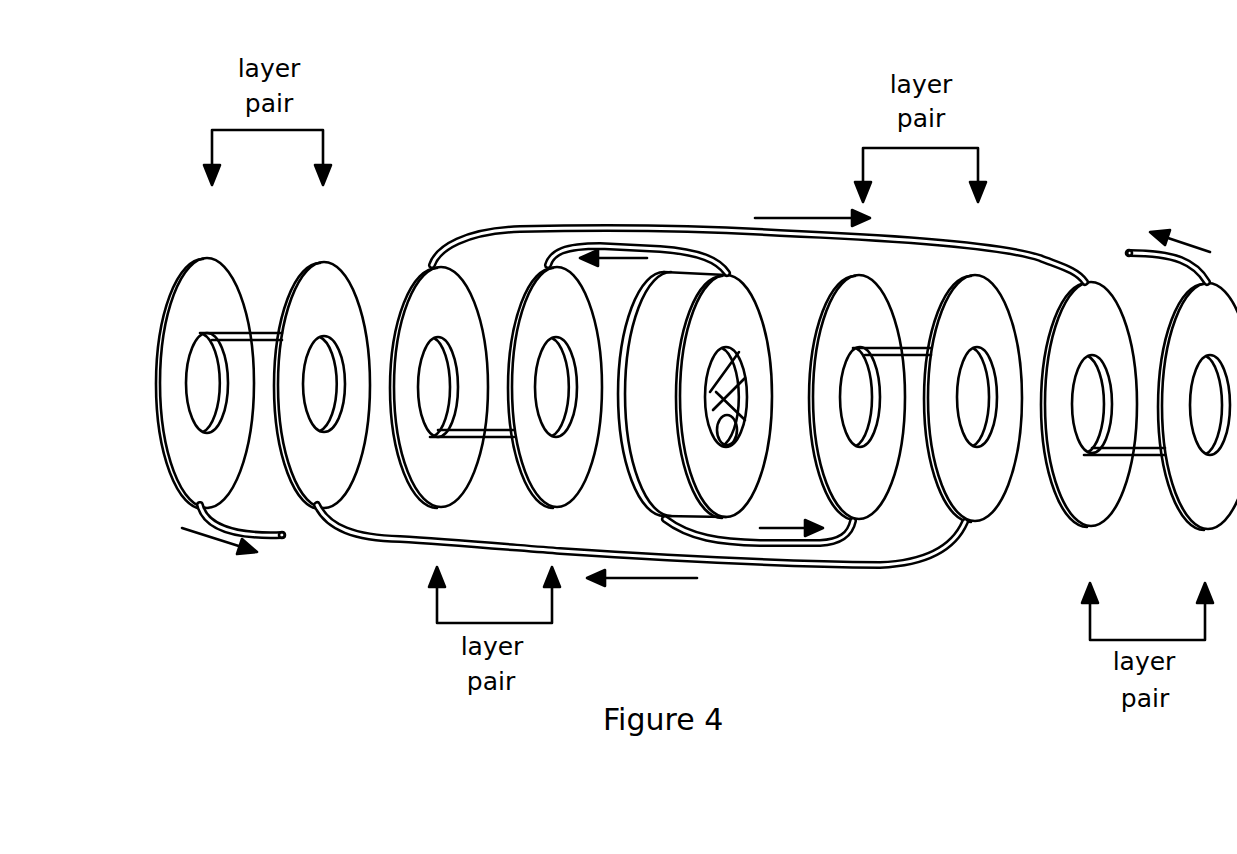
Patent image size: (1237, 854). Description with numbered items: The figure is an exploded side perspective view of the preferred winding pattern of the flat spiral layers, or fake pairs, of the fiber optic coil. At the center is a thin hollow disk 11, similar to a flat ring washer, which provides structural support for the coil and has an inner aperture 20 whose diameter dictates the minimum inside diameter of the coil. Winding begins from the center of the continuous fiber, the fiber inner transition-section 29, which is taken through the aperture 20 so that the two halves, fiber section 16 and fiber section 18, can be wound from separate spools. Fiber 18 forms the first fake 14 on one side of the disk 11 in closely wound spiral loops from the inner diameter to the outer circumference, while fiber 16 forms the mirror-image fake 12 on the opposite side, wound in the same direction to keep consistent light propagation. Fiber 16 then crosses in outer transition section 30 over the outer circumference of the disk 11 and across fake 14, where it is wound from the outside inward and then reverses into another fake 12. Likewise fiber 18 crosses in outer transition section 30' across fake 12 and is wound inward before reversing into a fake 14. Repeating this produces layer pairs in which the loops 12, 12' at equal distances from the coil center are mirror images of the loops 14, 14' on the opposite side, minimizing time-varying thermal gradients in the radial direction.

The thin hollow disk 11 is at (637, 412).
The fiber spiral layer or fake 12 is at (589, 390).
The fiber spiral layer or fake 12' is at (565, 391).
The fiber spiral layer or fake 14 is at (813, 398).
The fiber spiral layer or fake 14' is at (797, 397).
The fiber section 16 is at (268, 520).
The fiber section 18 is at (1137, 250).
The inner aperture 20 is at (719, 445).
The fiber inner transition-section 29 is at (727, 413).
The outer transition section 30 is at (641, 581).
The outer transition section 30' is at (758, 205).